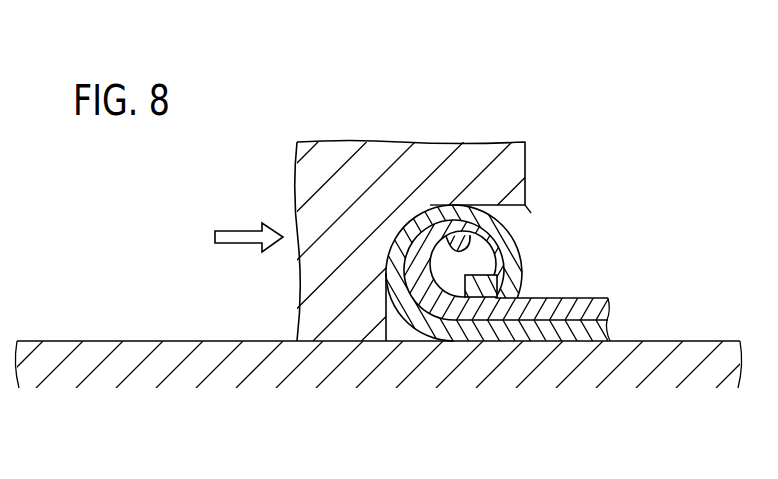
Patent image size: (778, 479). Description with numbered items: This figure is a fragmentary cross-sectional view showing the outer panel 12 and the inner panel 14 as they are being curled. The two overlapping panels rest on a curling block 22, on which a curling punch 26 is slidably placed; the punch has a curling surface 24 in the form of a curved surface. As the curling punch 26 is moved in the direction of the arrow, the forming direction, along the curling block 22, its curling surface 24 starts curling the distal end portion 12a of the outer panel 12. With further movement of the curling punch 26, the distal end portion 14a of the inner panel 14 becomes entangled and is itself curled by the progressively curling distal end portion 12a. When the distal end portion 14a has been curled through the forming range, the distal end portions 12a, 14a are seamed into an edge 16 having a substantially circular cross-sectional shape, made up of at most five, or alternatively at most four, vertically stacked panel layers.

The outer panel 12 is at (577, 330).
The distal end portion of the outer panel 12a is at (487, 279).
The inner panel 14 is at (598, 297).
The distal end portion of the inner panel 14a is at (468, 244).
The edge 16 is at (413, 225).
The curling block 22 is at (220, 353).
The curling surface 24 is at (524, 220).
The curling punch 26 is at (526, 164).